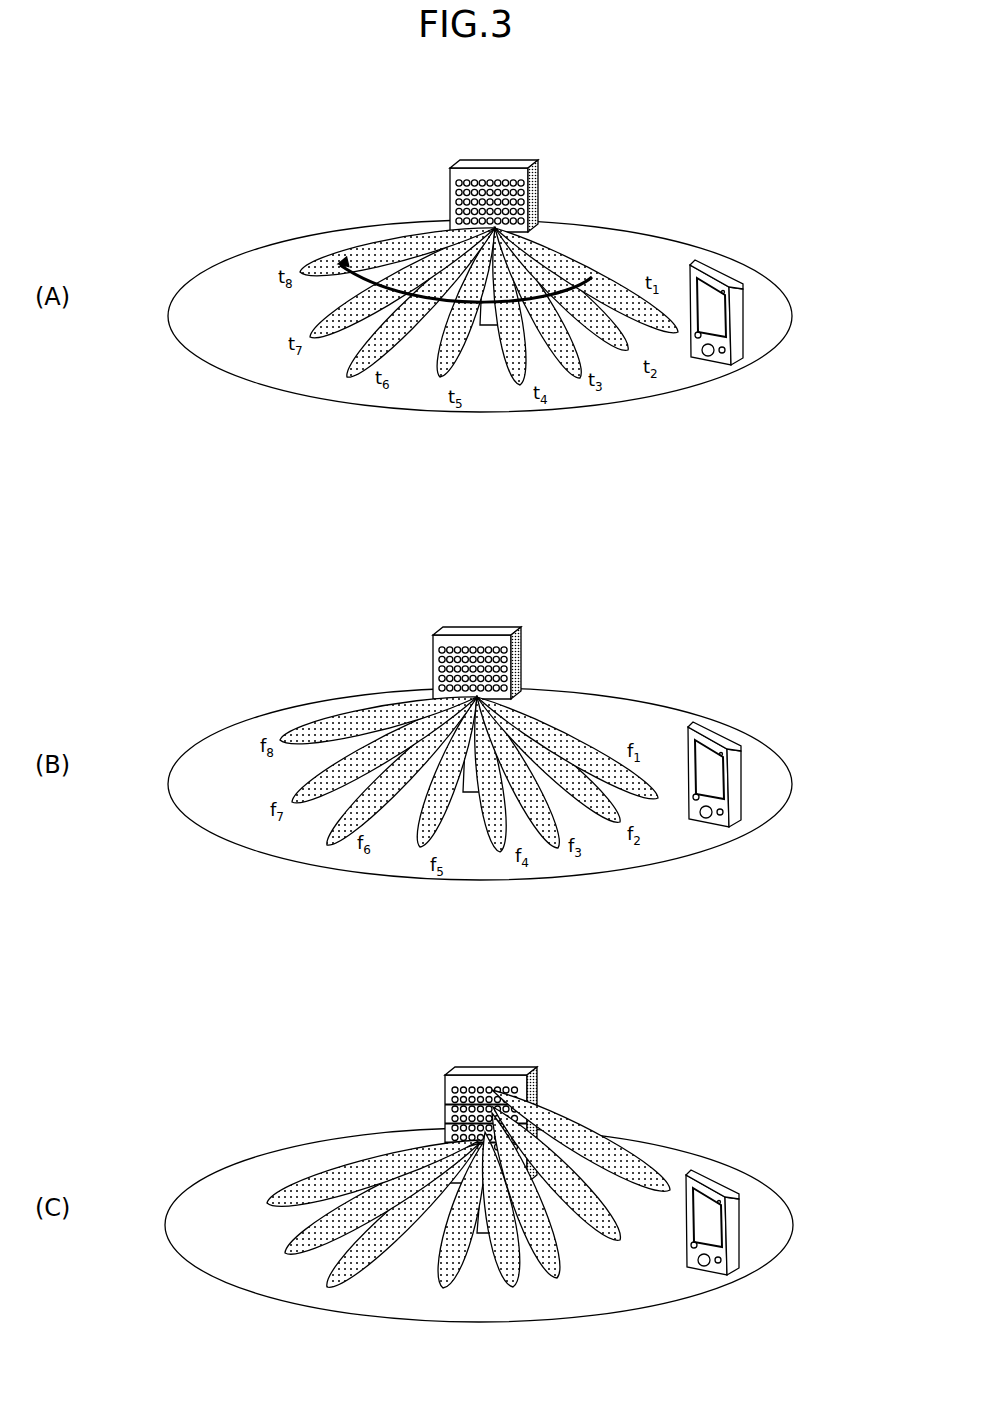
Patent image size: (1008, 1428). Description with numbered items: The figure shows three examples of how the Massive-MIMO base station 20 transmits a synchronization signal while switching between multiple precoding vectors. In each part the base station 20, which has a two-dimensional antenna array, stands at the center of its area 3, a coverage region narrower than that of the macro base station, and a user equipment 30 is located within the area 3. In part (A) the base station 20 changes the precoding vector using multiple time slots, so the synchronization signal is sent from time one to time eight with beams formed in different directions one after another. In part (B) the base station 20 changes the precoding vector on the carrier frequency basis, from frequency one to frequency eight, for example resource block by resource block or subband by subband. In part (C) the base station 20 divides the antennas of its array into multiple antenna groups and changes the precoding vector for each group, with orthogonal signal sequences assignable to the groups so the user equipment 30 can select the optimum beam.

The area 3 is at (677, 392).
The 3D-MIMO base station 20 is at (481, 159).
The user equipment 30 is at (743, 332).